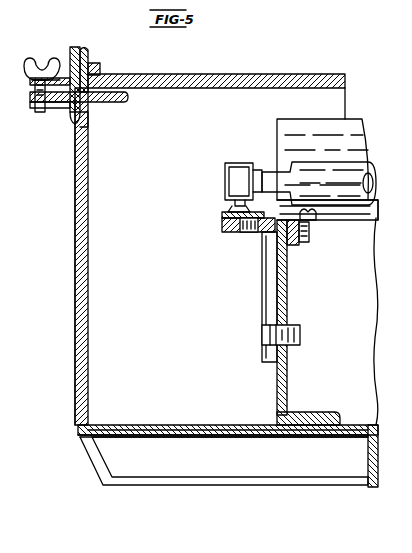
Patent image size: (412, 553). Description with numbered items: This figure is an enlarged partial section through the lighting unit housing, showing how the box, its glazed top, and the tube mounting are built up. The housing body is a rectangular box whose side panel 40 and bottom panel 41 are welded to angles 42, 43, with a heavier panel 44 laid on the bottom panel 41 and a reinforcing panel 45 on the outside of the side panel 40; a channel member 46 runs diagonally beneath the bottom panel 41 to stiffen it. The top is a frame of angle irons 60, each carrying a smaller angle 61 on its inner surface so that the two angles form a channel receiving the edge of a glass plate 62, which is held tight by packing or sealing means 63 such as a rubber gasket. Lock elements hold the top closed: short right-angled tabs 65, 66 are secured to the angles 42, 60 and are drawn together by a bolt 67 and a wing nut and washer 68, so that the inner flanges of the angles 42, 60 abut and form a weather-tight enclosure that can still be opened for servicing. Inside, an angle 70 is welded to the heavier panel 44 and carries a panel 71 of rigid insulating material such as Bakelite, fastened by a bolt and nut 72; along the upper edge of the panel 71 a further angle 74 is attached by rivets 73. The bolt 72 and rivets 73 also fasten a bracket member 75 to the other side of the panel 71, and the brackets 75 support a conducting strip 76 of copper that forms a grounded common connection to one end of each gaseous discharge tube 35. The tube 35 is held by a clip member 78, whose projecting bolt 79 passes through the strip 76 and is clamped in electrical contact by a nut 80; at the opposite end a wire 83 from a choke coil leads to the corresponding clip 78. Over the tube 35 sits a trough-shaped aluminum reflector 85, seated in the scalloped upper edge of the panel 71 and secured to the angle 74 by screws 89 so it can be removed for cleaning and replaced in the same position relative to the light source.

The gaseous discharge tube 35 is at (368, 165).
The side panel 40 is at (88, 278).
The bottom panel 41 is at (372, 430).
The angle 42 is at (105, 102).
The angle 43 is at (78, 428).
The heavier panel 44 is at (185, 425).
The reinforcing panel 45 is at (75, 233).
The channel member 46 is at (140, 486).
The angle iron 60 is at (74, 48).
The smaller angle 61 is at (84, 48).
The glass plate 62 is at (262, 74).
The packing or sealing means 63 is at (100, 70).
The right-angled tab 65 is at (70, 115).
The right-angled tab 66 is at (68, 78).
The bolt 67 is at (40, 112).
The wing nut and washer 68 is at (45, 62).
The angle 70 is at (290, 390).
The panel of rigid insulating material 71 is at (288, 293).
The bolt and nut 72 is at (300, 340).
The rivet 73 is at (295, 240).
The angle 74 is at (302, 238).
The bracket member 75 is at (262, 293).
The conducting strip 76 is at (222, 214).
The clip member 78 is at (232, 172).
The projecting bolt 79 is at (245, 230).
The nut 80 is at (222, 231).
The wire 83 is at (343, 312).
The reflector 85 is at (355, 125).
The screw 89 is at (312, 237).